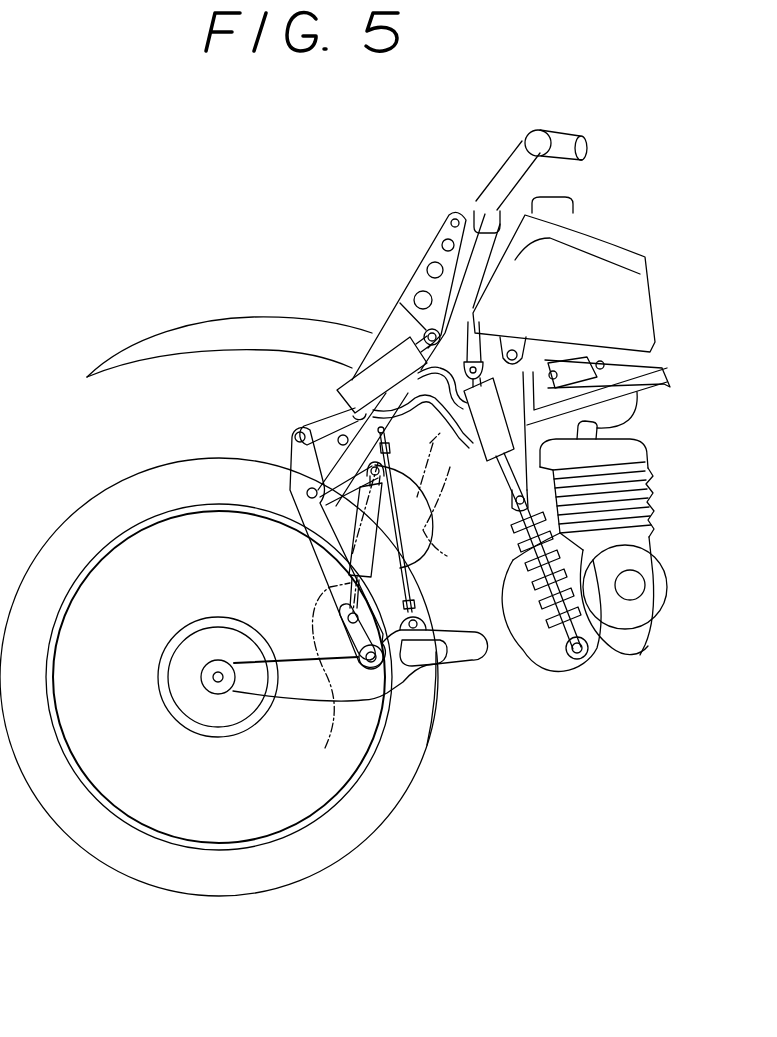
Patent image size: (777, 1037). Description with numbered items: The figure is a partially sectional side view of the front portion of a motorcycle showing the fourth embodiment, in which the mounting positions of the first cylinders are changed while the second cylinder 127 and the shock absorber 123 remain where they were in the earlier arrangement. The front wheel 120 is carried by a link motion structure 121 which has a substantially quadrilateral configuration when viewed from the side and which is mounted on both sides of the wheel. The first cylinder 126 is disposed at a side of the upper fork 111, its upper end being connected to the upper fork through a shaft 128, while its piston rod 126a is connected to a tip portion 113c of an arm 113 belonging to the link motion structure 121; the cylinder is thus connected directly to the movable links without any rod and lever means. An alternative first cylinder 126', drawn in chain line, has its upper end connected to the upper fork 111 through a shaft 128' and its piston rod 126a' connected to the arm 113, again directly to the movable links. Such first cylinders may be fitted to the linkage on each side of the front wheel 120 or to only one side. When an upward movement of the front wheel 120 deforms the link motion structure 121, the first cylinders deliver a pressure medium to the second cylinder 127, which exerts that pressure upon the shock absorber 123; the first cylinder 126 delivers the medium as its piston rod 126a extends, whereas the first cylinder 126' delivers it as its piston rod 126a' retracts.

The upper fork 111 is at (418, 268).
The arm 113 is at (313, 531).
The tip portion 113c is at (300, 467).
The front wheel 120 is at (149, 864).
The link motion structure 121 is at (310, 591).
The shock absorber 123 is at (523, 633).
The first cylinder 126 is at (362, 340).
The first cylinder 126' is at (257, 537).
The piston rod 126a is at (292, 401).
The piston rod 126a' is at (321, 684).
The second cylinder 127 is at (483, 407).
The shaft 128 is at (403, 428).
The shaft 128' is at (428, 508).